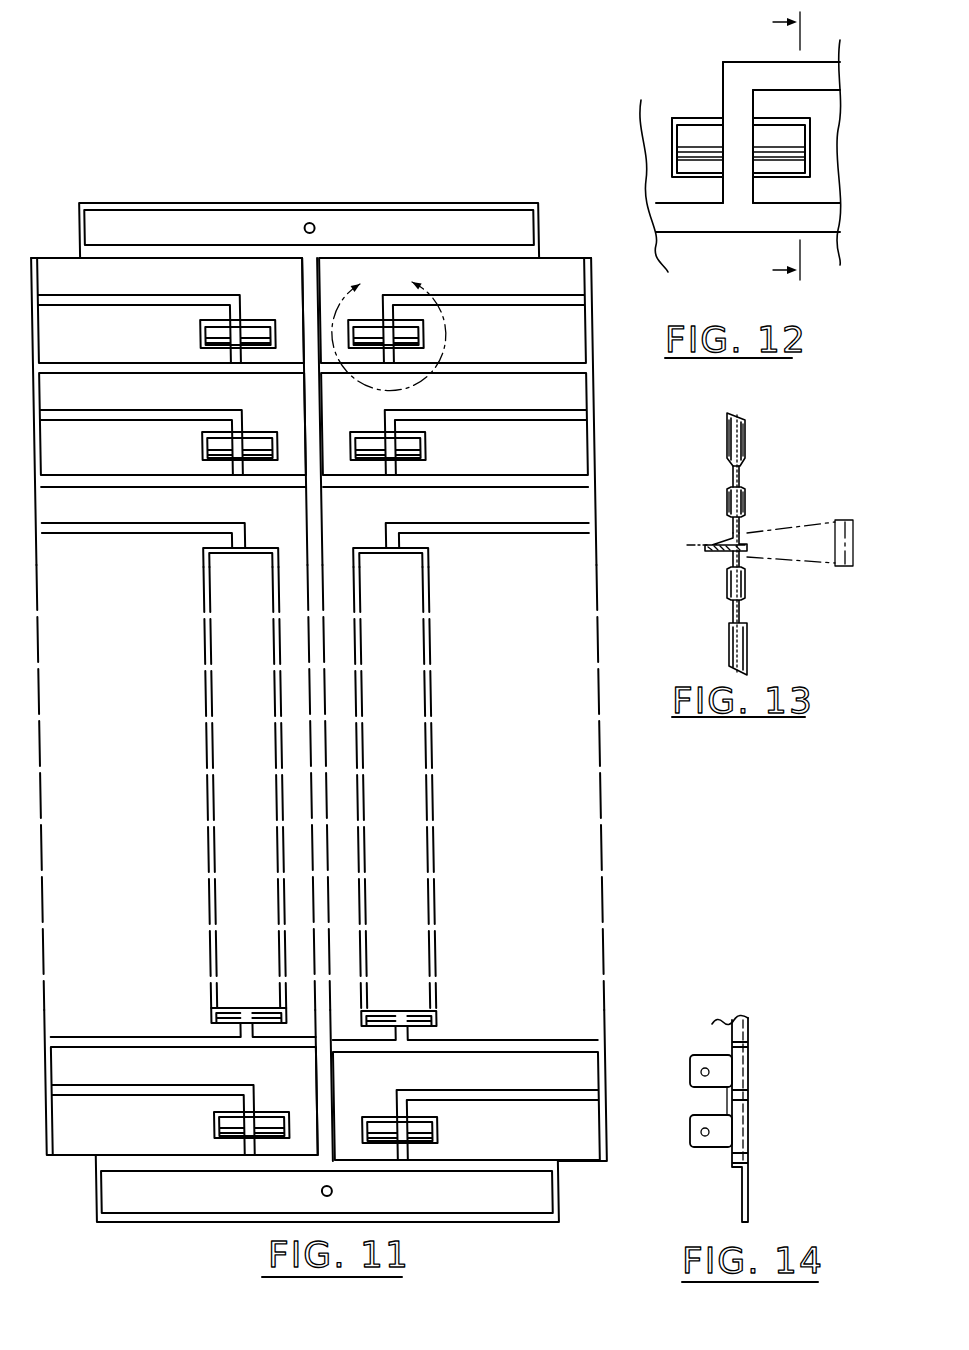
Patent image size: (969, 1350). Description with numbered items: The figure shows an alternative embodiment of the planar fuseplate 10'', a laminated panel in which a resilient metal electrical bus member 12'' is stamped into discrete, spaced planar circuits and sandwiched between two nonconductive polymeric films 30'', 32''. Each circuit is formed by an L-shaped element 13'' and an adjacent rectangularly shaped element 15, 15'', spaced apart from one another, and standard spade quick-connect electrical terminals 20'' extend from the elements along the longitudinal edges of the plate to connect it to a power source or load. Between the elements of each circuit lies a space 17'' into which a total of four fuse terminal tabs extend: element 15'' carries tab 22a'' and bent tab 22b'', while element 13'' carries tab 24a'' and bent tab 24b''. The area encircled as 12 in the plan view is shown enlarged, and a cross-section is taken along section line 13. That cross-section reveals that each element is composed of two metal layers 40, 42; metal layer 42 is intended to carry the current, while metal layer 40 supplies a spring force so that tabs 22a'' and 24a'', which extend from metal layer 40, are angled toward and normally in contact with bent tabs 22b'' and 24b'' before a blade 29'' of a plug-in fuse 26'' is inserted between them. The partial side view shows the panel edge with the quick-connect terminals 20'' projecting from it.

In FIG. 11, the planar fuseplate 10'' is at (346, 680).
In FIG. 14, the planar fuseplate 10'' is at (778, 1118).
In FIG. 11, the electrical bus member 12'' is at (306, 230).
In FIG. 11, the L-shaped element 13'' is at (463, 288).
In FIG. 11, the rectangularly shaped element 15'' is at (351, 740).
In FIG. 11, the encircled area 12 is at (389, 326).
In FIG. 12, the section line 13 is at (766, 147).
In FIG. 12, the rectangularly shaped element 15 is at (763, 156).
In FIG. 12, the space 17'' is at (712, 123).
In FIG. 12, the tab 22a'' is at (798, 119).
In FIG. 13, the tab 22a'' is at (703, 528).
In FIG. 12, the bent tab 22b'' is at (796, 200).
In FIG. 13, the bent tab 22b'' is at (703, 613).
In FIG. 12, the tab 24a'' is at (649, 147).
In FIG. 12, the bent tab 24b'' is at (697, 200).
In FIG. 13, the fuse 26'' is at (806, 523).
In FIG. 13, the blade 29'' is at (669, 564).
In FIG. 13, the nonconductive polymeric film 30'' is at (775, 542).
In FIG. 13, the nonconductive polymeric film 32'' is at (705, 438).
In FIG. 13, the metal layer 40 is at (745, 493).
In FIG. 13, the metal layer 42 is at (727, 499).
In FIG. 14, the electrical terminal 20'' is at (693, 1105).